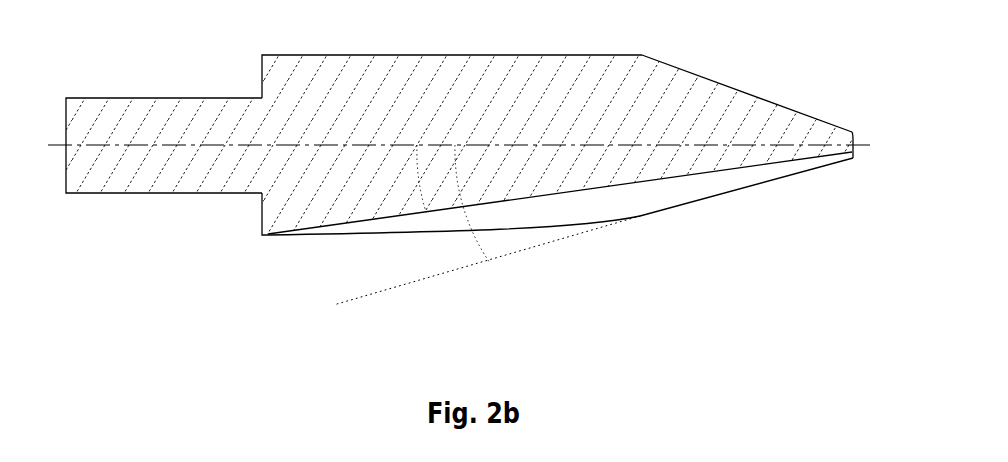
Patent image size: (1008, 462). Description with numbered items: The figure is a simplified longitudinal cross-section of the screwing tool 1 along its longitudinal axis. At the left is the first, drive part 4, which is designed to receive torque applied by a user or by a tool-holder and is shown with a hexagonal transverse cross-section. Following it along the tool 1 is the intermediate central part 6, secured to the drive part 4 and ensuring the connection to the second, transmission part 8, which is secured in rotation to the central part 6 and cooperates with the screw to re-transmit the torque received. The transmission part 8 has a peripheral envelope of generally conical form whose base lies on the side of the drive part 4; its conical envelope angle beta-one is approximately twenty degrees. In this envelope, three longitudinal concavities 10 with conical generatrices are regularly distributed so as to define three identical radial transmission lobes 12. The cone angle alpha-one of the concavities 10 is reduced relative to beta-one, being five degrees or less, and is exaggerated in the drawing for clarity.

The screwing tool 1 is at (523, 314).
The first, drive part 4 is at (115, 115).
The intermediate central part 6 is at (350, 80).
The second, transmission part 8 is at (723, 72).
The longitudinal concavities 10 is at (653, 217).
The radial transmission lobes 12 is at (729, 193).